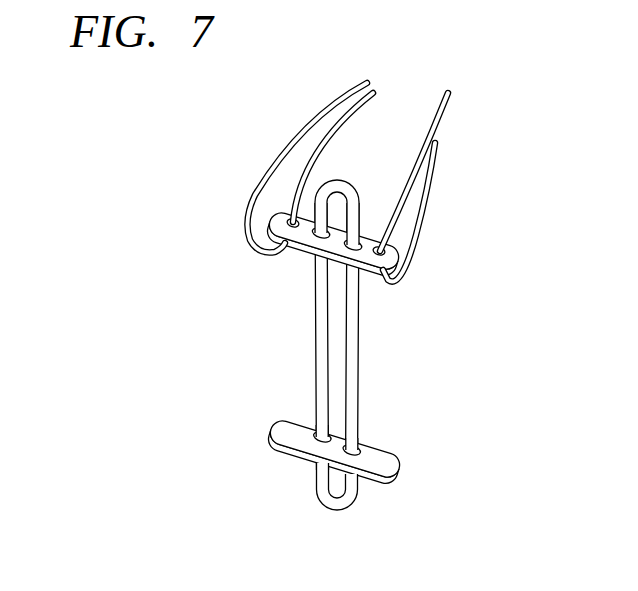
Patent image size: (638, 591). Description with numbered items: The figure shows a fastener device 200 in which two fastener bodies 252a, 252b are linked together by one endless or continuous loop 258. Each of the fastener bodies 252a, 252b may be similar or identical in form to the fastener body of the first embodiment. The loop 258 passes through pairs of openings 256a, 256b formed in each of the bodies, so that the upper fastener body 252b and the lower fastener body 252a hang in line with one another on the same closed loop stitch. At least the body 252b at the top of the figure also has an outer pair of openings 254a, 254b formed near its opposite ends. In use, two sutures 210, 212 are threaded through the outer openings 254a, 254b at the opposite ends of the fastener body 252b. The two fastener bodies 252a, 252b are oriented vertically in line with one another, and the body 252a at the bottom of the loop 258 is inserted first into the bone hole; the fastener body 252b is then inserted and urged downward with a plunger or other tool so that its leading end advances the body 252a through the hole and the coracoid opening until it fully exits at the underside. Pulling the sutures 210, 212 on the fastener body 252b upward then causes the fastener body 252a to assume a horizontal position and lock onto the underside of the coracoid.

The fastener device 200 is at (404, 352).
The suture 210 is at (275, 157).
The suture 212 is at (444, 187).
The fastener body 252a is at (378, 443).
The fastener body 252b is at (375, 279).
The outer opening 254a is at (262, 213).
The outer opening 254b is at (390, 244).
The opening 256a is at (298, 240).
The opening 256b is at (362, 212).
The endless loop 258 is at (360, 392).